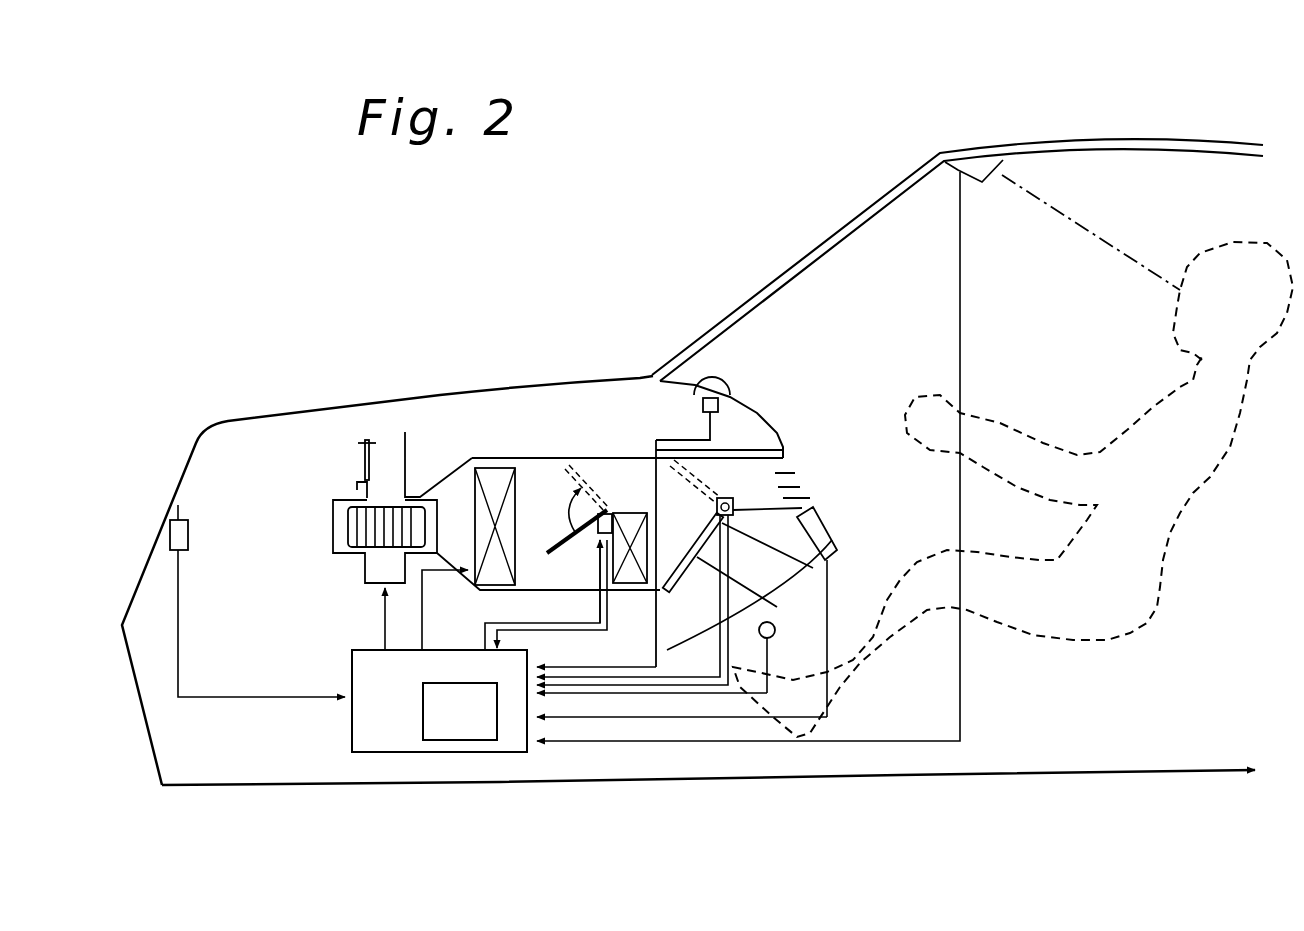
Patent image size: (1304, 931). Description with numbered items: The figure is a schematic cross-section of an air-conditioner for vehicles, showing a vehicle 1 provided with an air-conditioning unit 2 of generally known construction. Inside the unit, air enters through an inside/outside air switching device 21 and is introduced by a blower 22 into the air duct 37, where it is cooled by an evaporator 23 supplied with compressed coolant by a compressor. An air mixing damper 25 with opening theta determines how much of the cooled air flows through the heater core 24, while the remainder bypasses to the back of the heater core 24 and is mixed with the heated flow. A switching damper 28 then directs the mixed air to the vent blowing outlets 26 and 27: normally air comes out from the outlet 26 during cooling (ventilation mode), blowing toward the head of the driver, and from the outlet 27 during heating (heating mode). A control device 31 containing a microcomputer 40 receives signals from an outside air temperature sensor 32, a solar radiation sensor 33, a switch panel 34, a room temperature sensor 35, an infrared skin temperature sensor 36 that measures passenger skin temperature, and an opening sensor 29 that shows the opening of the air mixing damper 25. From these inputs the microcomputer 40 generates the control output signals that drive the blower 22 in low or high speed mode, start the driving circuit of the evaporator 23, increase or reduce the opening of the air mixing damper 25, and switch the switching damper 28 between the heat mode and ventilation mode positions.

The vehicle 1 is at (840, 195).
The air-conditioning unit 2 is at (545, 450).
The inside/outside air switching device 21 is at (360, 460).
The blower 22 is at (354, 561).
The evaporator 23 is at (489, 590).
The heater core 24 is at (622, 592).
The air mixing damper 25 is at (598, 515).
The vent blowing outlet 26 is at (811, 474).
The vent blowing outlet 27 is at (793, 580).
The switching damper 28 is at (680, 458).
The opening sensor 29 is at (617, 513).
The control device 31 is at (393, 757).
The outside air temperature sensor 32 is at (178, 505).
The solar radiation sensor 33 is at (710, 378).
The switch panel 34 is at (830, 543).
The room temperature sensor 35 is at (775, 628).
The infrared skin temperature sensor 36 is at (978, 167).
The air duct 37 is at (527, 480).
The microcomputer 40 is at (477, 741).